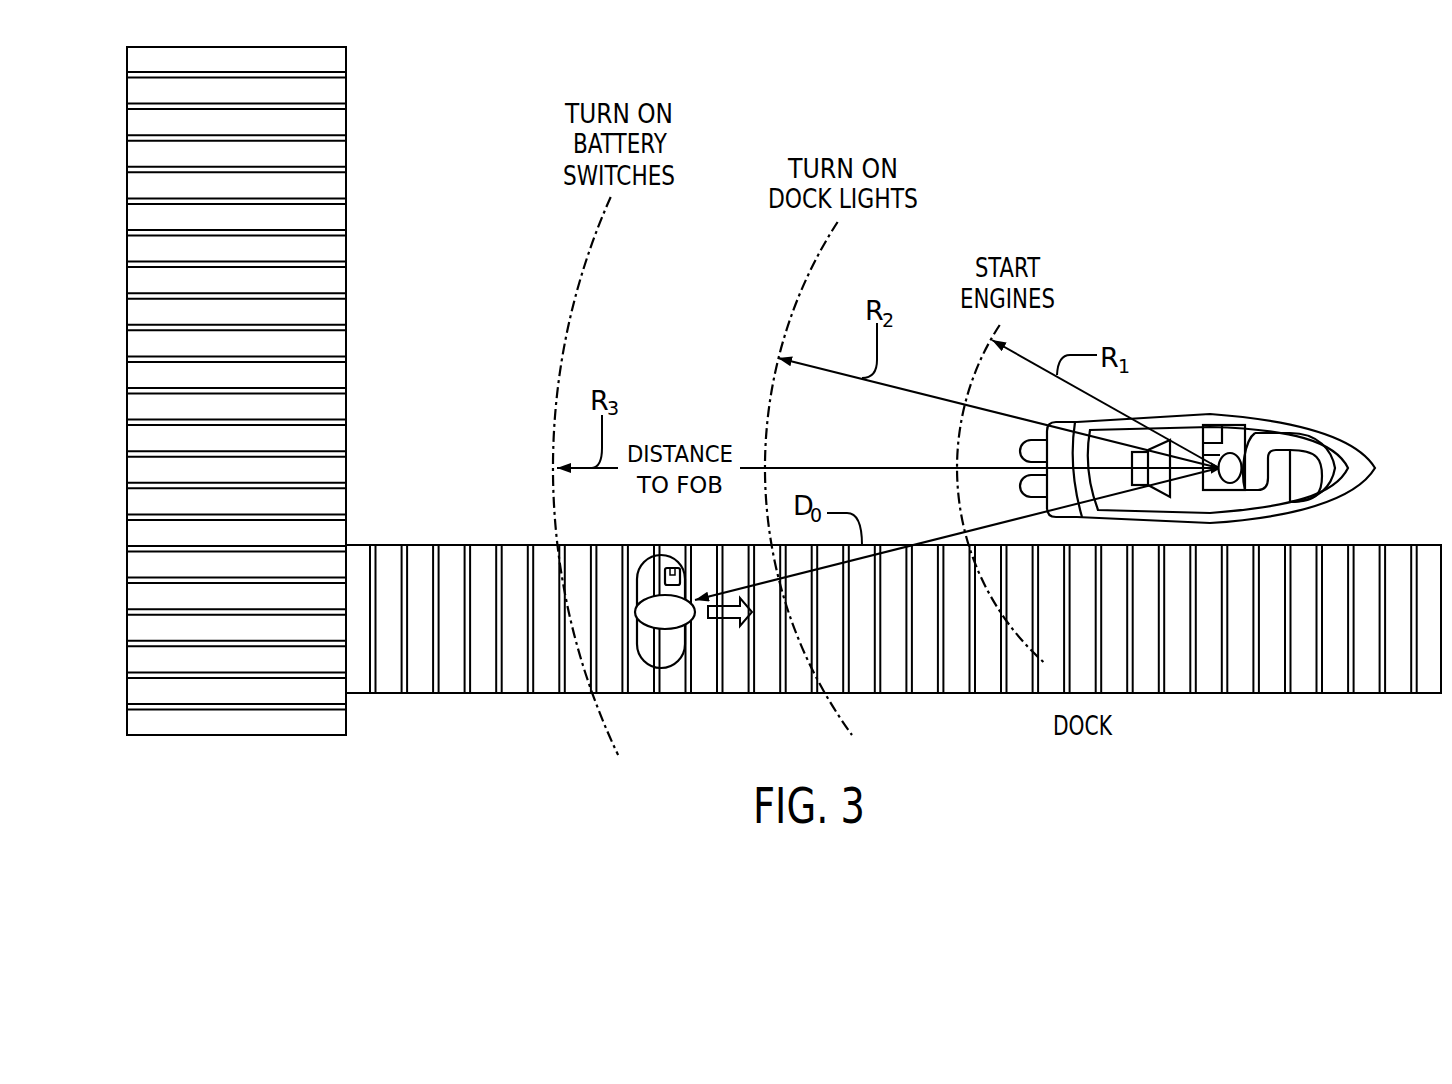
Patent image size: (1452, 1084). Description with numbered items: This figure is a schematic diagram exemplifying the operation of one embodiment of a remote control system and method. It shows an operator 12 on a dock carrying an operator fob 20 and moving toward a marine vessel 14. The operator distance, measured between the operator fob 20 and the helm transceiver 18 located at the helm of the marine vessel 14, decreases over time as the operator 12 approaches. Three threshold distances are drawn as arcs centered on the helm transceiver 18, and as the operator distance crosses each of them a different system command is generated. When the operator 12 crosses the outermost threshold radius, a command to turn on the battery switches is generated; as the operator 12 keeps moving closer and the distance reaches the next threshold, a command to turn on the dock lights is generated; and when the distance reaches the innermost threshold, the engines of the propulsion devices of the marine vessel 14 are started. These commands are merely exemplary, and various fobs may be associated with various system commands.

The operator 12 is at (662, 650).
The marine vessel 14 is at (1338, 432).
The helm transceiver 18 is at (1231, 448).
The operator fob 20 is at (677, 567).